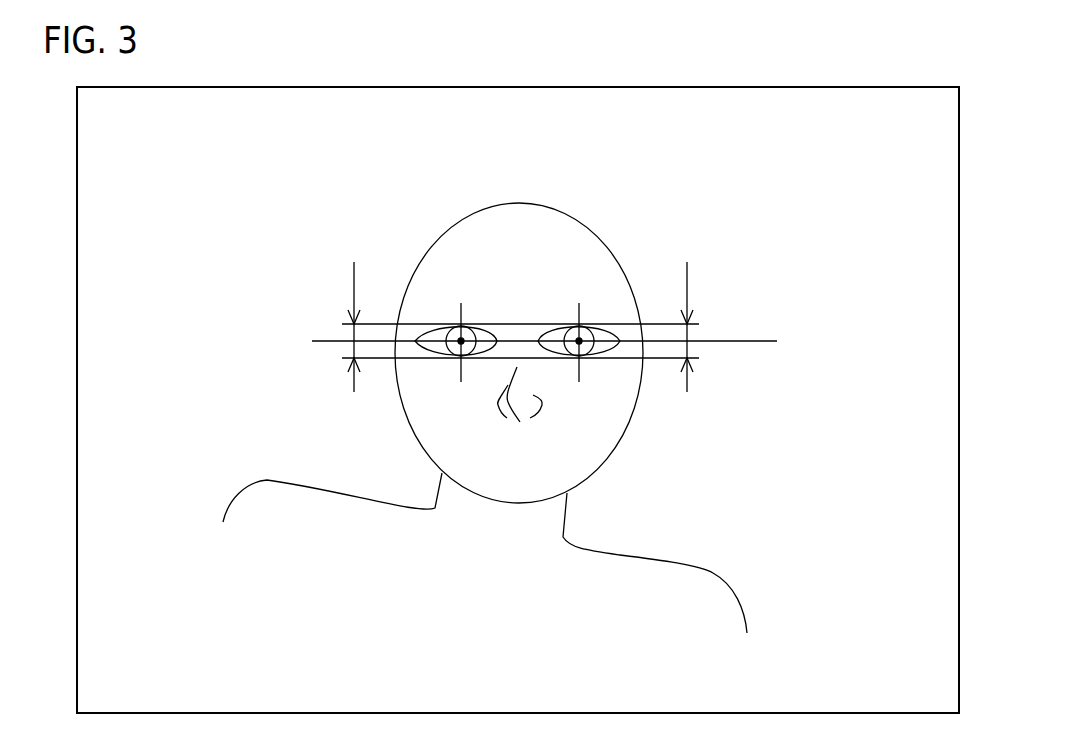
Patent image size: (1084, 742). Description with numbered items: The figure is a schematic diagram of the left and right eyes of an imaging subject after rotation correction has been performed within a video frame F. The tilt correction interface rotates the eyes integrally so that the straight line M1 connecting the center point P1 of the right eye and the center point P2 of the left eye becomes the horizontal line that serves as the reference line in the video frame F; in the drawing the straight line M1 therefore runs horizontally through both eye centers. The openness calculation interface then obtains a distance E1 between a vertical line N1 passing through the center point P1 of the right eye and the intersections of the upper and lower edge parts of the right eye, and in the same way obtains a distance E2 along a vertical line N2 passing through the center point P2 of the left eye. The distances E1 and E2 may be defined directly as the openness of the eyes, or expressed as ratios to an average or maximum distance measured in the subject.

The video frame F is at (518, 400).
The center point of right eye P1 is at (462, 339).
The center point of left eye P2 is at (581, 339).
The vertical line N1 is at (460, 358).
The vertical line N2 is at (578, 358).
The straight line M1 is at (563, 343).
The distance E1 is at (340, 327).
The distance E2 is at (705, 327).